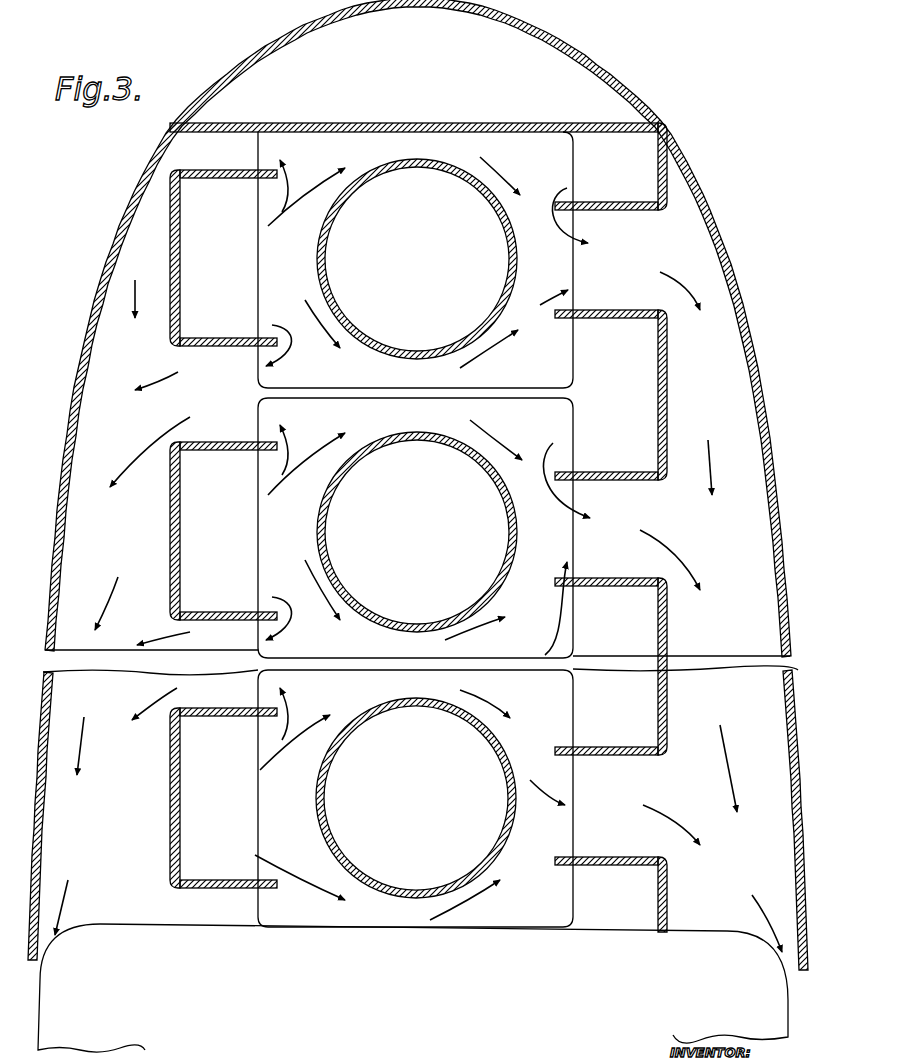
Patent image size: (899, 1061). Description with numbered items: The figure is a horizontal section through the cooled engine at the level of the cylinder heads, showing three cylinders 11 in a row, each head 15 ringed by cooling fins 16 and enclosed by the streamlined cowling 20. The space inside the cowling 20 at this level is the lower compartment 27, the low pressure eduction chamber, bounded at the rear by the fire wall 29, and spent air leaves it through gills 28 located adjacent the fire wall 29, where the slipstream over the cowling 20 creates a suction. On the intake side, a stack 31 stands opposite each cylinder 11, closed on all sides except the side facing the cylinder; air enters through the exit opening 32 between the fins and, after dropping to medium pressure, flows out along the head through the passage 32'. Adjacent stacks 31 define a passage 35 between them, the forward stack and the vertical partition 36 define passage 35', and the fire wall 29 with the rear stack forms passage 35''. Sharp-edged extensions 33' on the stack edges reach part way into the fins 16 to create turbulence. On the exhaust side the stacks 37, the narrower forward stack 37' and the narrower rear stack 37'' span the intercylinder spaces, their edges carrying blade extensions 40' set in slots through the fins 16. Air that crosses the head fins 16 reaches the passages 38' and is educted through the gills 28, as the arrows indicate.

The cylinder 11 is at (500, 218).
The cylinder head 15 is at (480, 128).
The cooling fins 16 is at (536, 150).
The cowling 20 is at (718, 234).
The lower compartment 27 is at (97, 413).
The gills 28 is at (42, 962).
The fire wall 29 is at (236, 912).
The stack 31 is at (190, 246).
The exit opening 32 is at (411, 798).
The passage 32' is at (403, 395).
The extension 33' is at (231, 529).
The passage 35 is at (142, 688).
The passage 35' is at (198, 286).
The passage 35'' is at (162, 901).
The vertical partition 36 is at (347, 124).
The stack 37 is at (679, 532).
The forward stack 37' is at (672, 170).
The rear stack 37'' is at (679, 894).
The passage 38' is at (654, 514).
The extension 40' is at (606, 519).